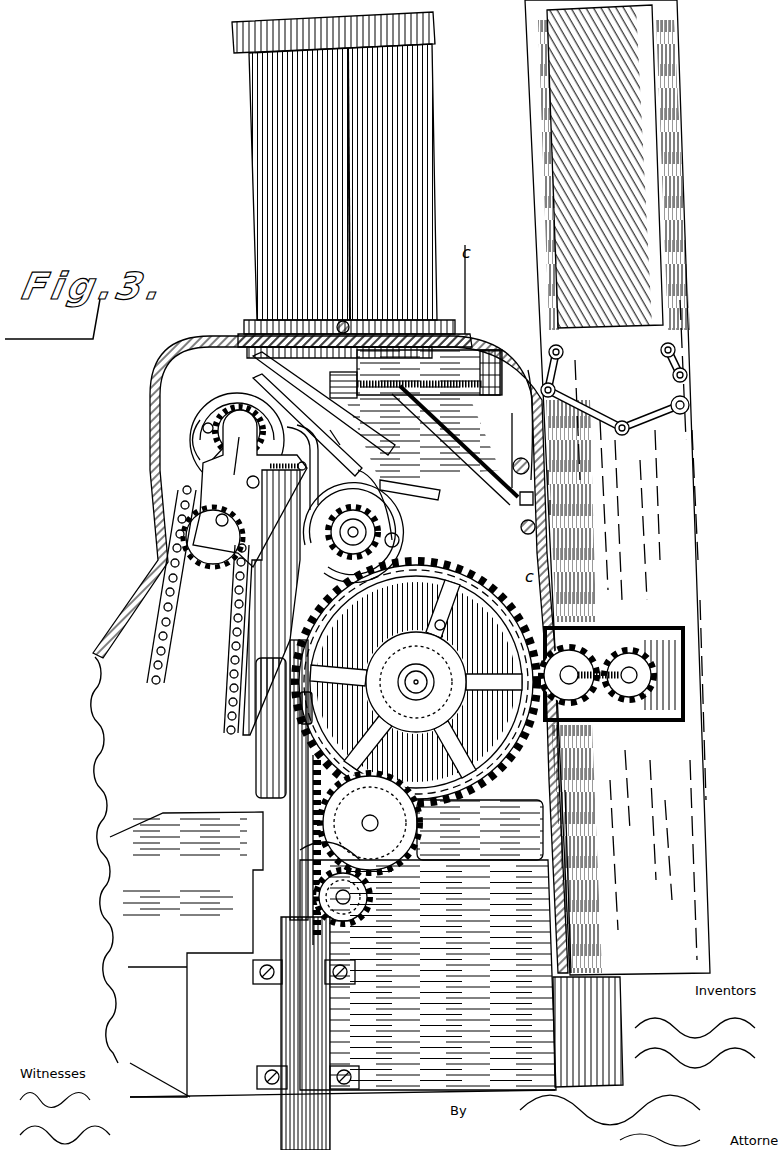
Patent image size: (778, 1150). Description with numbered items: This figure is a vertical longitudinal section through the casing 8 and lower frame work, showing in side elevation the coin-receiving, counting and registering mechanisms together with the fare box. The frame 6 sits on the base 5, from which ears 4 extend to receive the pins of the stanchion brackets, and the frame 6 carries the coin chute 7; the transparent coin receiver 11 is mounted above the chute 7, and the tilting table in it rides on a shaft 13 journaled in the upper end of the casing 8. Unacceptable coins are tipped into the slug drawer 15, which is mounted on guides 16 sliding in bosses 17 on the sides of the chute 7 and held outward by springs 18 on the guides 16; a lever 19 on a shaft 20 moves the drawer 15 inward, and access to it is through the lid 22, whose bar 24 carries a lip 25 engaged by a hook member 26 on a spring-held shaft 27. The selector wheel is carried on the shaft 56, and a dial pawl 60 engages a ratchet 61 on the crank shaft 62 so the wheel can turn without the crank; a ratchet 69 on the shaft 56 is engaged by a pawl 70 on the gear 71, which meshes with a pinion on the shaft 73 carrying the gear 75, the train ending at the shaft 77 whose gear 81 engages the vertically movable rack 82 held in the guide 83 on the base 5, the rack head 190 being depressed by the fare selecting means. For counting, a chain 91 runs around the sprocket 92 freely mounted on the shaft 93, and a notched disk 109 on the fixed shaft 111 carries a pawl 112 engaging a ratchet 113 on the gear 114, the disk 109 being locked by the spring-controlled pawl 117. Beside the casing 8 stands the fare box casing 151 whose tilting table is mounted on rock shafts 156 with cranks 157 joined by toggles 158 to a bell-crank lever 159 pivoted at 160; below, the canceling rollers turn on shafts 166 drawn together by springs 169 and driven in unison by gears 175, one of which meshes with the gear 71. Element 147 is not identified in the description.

The coin receiver 11 is at (270, 171).
The shaft 13 is at (340, 322).
The slug drawer 15 is at (423, 416).
The guides 16 is at (330, 392).
The coin chute 7 is at (448, 445).
The bosses 17 is at (496, 322).
The springs 18 is at (440, 420).
The spring-controlled pawl 117 is at (338, 430).
The bell-crank lever 159 is at (410, 481).
The lever 19 is at (512, 410).
The lid 22 is at (528, 370).
The shaft 20 is at (513, 466).
The hook member 26 is at (520, 505).
The shaft 27 is at (536, 530).
The bar 24 is at (548, 478).
The lip 25 is at (550, 508).
The disk 109 is at (220, 410).
The pawl 112 is at (154, 436).
The gear 114 is at (216, 445).
The ratchet 113 is at (205, 462).
The shaft 93 is at (250, 488).
The shaft 111 is at (230, 464).
The ratchet 61 is at (336, 548).
The shaft 62 is at (350, 500).
The pawl 60 is at (378, 522).
The sprocket 92 is at (215, 565).
The chain 91 is at (160, 660).
The frame 6 is at (271, 602).
The shaft 56 is at (420, 684).
The ratchet 69 is at (398, 665).
The pawl 70 is at (424, 635).
The gear 71 is at (462, 582).
The rack 82 is at (290, 768).
The head 190 is at (300, 715).
The shaft 73 is at (420, 843).
The gear 75 is at (480, 830).
The gear 81 is at (365, 882).
The shaft 77 is at (345, 900).
The guide 83 is at (295, 1012).
The base 5 is at (217, 1039).
The ears 4 is at (147, 1085).
The casing 151 is at (668, 87).
The cranks 157 is at (674, 370).
The rock shafts 156 is at (665, 348).
The toggles 158 is at (614, 399).
The pivot 160 is at (690, 402).
The shafts 166 is at (574, 682).
The gears 175 is at (578, 660).
The springs 169 is at (631, 740).
The rod 147 is at (470, 770).
The casing 8 is at (562, 877).